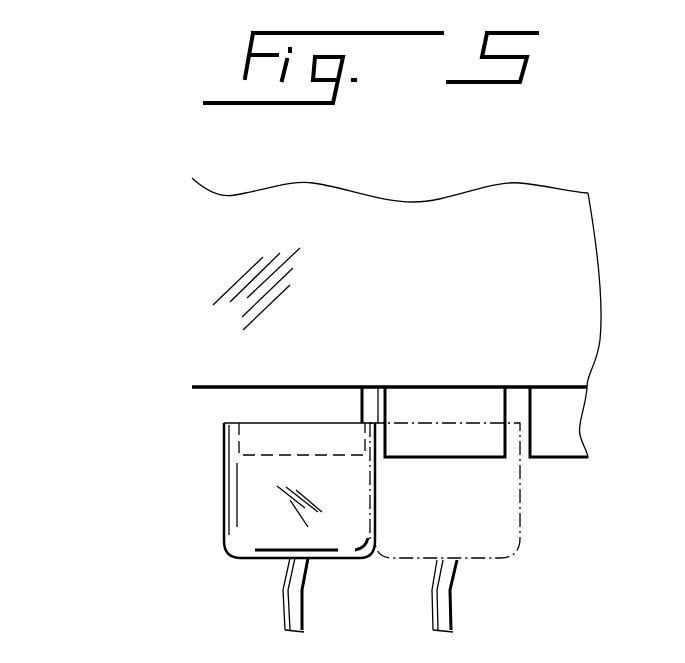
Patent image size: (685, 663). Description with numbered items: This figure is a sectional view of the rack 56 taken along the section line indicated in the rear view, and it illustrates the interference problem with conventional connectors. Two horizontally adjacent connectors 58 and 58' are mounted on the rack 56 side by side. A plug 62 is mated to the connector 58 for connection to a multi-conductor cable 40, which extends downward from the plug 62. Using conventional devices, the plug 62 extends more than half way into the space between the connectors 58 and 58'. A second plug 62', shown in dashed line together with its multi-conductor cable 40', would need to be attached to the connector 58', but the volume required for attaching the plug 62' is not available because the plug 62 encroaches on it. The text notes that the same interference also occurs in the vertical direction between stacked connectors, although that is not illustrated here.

The rack 56 is at (203, 295).
The connector 58 is at (365, 405).
The connector 58' is at (522, 422).
The plug 62 is at (248, 490).
The plug 62' is at (488, 490).
The multi-conductor cable 40 is at (252, 595).
The multi-conductor cable 40' is at (486, 596).